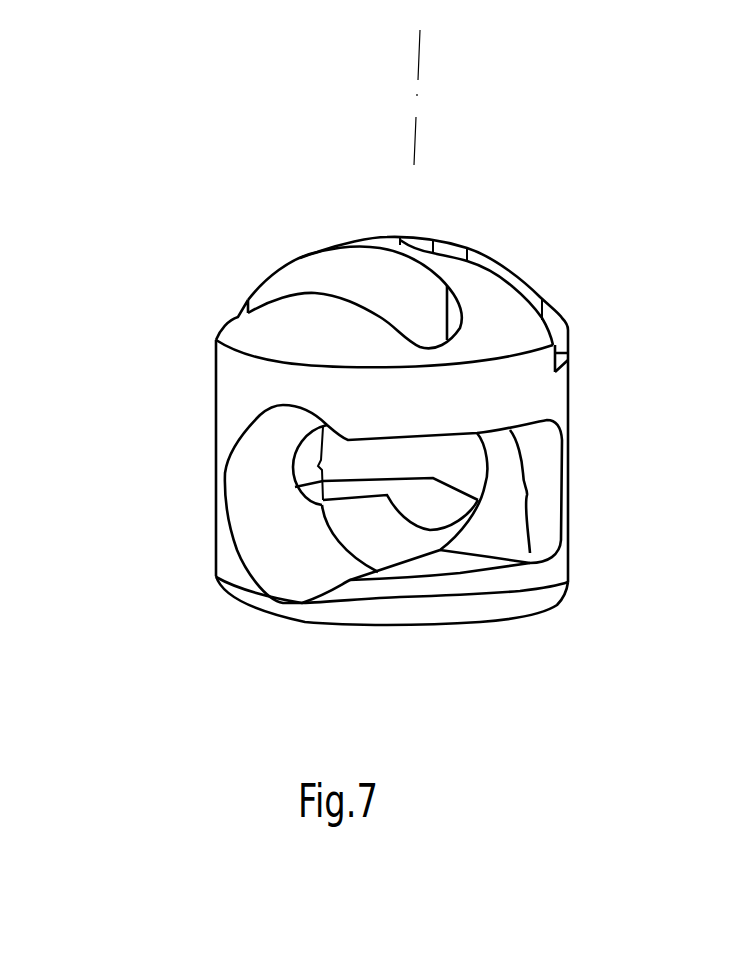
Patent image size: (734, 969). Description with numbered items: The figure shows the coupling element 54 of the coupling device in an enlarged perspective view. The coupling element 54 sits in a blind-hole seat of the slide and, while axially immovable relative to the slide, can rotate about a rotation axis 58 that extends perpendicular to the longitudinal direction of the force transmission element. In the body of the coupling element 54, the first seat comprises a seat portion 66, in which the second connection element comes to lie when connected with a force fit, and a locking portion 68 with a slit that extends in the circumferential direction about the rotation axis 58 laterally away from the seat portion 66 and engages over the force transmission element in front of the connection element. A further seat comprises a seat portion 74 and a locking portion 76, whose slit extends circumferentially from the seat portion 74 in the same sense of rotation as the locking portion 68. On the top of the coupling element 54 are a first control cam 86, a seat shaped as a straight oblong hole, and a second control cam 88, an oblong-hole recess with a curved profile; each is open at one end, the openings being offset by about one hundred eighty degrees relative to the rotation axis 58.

The coupling element 54 is at (140, 337).
The rotation axis 58 is at (420, 47).
The seat portion 66 is at (353, 532).
The locking portion 68 is at (533, 493).
The seat portion 74 is at (430, 505).
The locking portion 76 is at (317, 468).
The first control cam 86 is at (313, 280).
The second control cam 88 is at (532, 292).